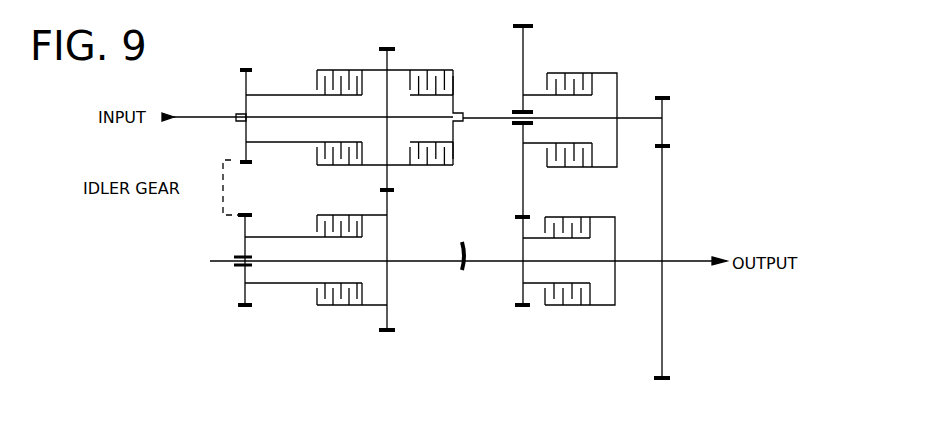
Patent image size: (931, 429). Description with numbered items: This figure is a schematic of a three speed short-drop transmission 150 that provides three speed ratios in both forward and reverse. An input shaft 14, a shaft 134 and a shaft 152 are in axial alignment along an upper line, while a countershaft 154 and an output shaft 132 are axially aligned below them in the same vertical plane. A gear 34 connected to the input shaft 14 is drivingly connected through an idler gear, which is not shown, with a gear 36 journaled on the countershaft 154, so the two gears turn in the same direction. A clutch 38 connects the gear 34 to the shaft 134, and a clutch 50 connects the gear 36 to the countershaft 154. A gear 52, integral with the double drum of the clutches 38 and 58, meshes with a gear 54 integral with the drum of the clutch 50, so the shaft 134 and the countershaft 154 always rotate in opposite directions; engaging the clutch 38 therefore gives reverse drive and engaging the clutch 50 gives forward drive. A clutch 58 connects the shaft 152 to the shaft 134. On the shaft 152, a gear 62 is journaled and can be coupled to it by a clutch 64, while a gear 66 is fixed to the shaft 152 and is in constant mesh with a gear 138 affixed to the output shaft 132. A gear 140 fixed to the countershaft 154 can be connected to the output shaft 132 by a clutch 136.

The input shaft 14 is at (202, 122).
The gear 34 is at (243, 82).
The gear 36 is at (243, 230).
The clutch 38 is at (334, 62).
The clutch 50 is at (348, 206).
The gear 52 is at (390, 60).
The gear 54 is at (388, 202).
The clutch 58 is at (432, 58).
The gear 62 is at (532, 40).
The clutch 64 is at (573, 63).
The gear 66 is at (670, 101).
The output shaft 132 is at (683, 263).
The shaft 134 is at (284, 120).
The clutch 136 is at (571, 205).
The gear 138 is at (673, 173).
The gear 140 is at (518, 292).
The transmission 150 is at (352, 333).
The shaft 152 is at (490, 121).
The countershaft 154 is at (444, 262).